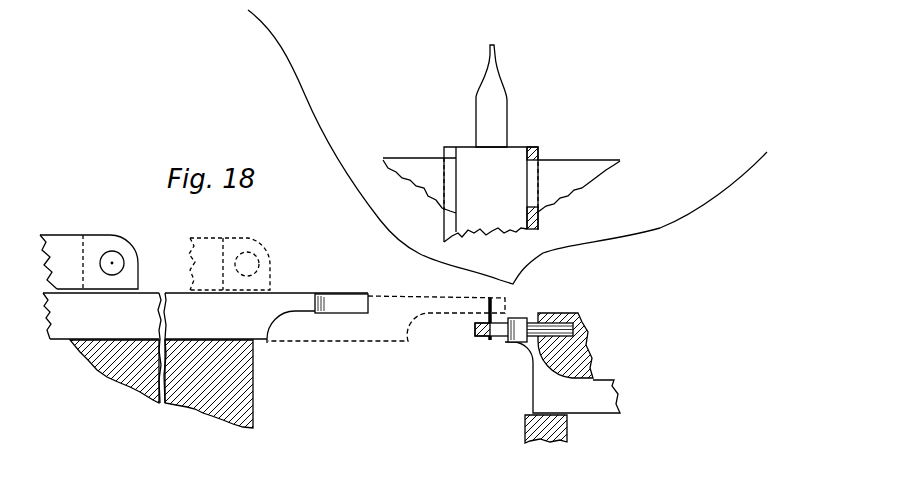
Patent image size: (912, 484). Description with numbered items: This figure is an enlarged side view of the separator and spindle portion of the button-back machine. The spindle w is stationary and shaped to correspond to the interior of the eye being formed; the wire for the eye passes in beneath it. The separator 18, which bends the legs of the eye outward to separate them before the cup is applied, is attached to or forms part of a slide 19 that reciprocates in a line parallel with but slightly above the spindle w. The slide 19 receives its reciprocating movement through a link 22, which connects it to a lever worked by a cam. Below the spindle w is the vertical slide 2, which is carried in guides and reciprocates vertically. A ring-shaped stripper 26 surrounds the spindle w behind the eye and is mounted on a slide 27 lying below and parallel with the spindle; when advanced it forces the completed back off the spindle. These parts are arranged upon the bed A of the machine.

The separator 18 is at (499, 73).
The slide 19 is at (331, 275).
The link 22 is at (155, 262).
The ring-shaped stripper 26 is at (517, 318).
The slide 27 is at (562, 363).
The vertical slide 2 is at (525, 433).
The bed A is at (169, 384).
The spindle w is at (473, 329).